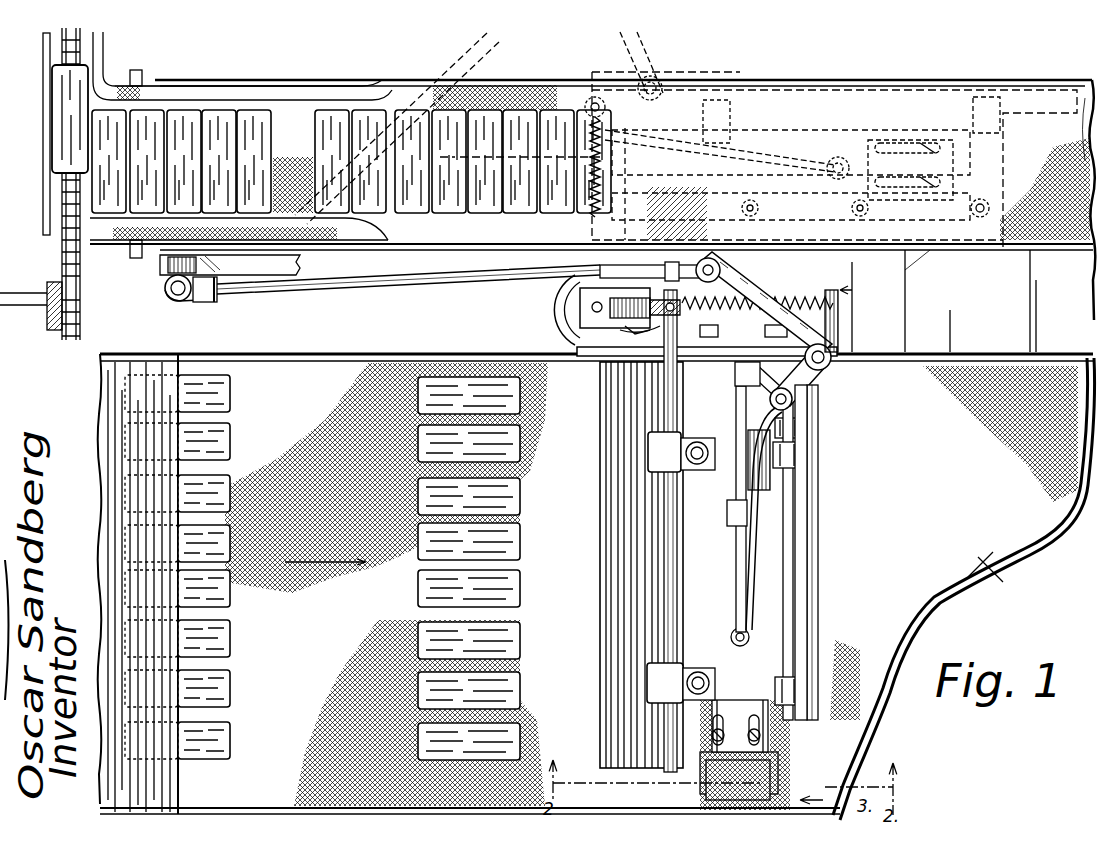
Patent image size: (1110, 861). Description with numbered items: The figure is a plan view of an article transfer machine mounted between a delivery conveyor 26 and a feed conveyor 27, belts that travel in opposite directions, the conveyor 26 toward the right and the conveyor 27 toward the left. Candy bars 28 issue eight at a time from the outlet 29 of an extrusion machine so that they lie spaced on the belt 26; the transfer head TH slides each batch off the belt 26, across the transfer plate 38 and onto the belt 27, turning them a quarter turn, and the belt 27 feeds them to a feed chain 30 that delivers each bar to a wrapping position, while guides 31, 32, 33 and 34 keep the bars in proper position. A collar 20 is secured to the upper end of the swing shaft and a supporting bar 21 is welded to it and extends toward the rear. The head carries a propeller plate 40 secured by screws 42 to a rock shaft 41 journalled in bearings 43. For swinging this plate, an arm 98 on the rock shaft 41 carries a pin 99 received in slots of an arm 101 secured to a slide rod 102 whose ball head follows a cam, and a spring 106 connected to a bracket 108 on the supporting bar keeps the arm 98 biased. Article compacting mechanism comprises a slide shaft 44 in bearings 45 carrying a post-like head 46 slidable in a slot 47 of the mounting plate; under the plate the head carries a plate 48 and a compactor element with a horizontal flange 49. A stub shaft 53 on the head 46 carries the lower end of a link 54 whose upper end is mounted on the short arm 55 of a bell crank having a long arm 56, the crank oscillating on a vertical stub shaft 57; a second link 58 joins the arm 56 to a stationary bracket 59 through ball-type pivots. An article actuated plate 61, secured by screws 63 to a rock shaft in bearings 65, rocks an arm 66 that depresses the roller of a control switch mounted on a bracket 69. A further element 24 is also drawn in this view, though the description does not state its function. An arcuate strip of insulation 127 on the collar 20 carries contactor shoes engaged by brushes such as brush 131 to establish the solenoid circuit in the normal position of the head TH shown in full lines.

The collar 20 is at (588, 272).
The supporting bar 21 is at (597, 198).
The spring 24 is at (700, 316).
The delivery conveyor 26 is at (988, 572).
The feed conveyor 27 is at (1085, 98).
The candy bars 28 is at (150, 115).
The outlet of extrusion machine 29 is at (170, 780).
The feed chain 30 is at (80, 266).
The guide 31 is at (47, 143).
The guide 32 is at (98, 63).
The guide 33 is at (258, 103).
The guide 34 is at (320, 244).
The transfer plate 38 is at (921, 352).
The propeller plate 40 is at (600, 545).
The rock shaft 41 is at (688, 268).
The screws 42 is at (685, 500).
The bearings 43 is at (650, 452).
The slide shaft 44 is at (790, 176).
The bearings 45 is at (738, 380).
The post-like head 46 is at (830, 157).
The slot 47 is at (860, 155).
The plate 48 is at (887, 196).
The horizontal flange 49 is at (962, 158).
The stub shaft 53 is at (835, 180).
The link 54 is at (720, 145).
The short arm of bell crank 55 is at (642, 110).
The long arm of bell crank 56 is at (642, 50).
The vertical stub shaft 57 is at (832, 364).
The second link 58 is at (452, 62).
The stationary bracket 59 is at (268, 280).
The article actuated plate 61 is at (937, 100).
The screws 63 is at (786, 500).
The bearings 65 is at (800, 450).
The arm 66 is at (720, 98).
The bracket 69 is at (764, 145).
The arm 98 is at (600, 266).
The pin 99 is at (630, 328).
The arm 101 is at (578, 290).
The slide rod 102 is at (592, 306).
The spring 106 is at (815, 300).
The bracket 108 is at (838, 315).
The arcuate strip of insulation 127 is at (583, 320).
The contactor brush 131 is at (590, 326).
The transfer head TH is at (838, 530).